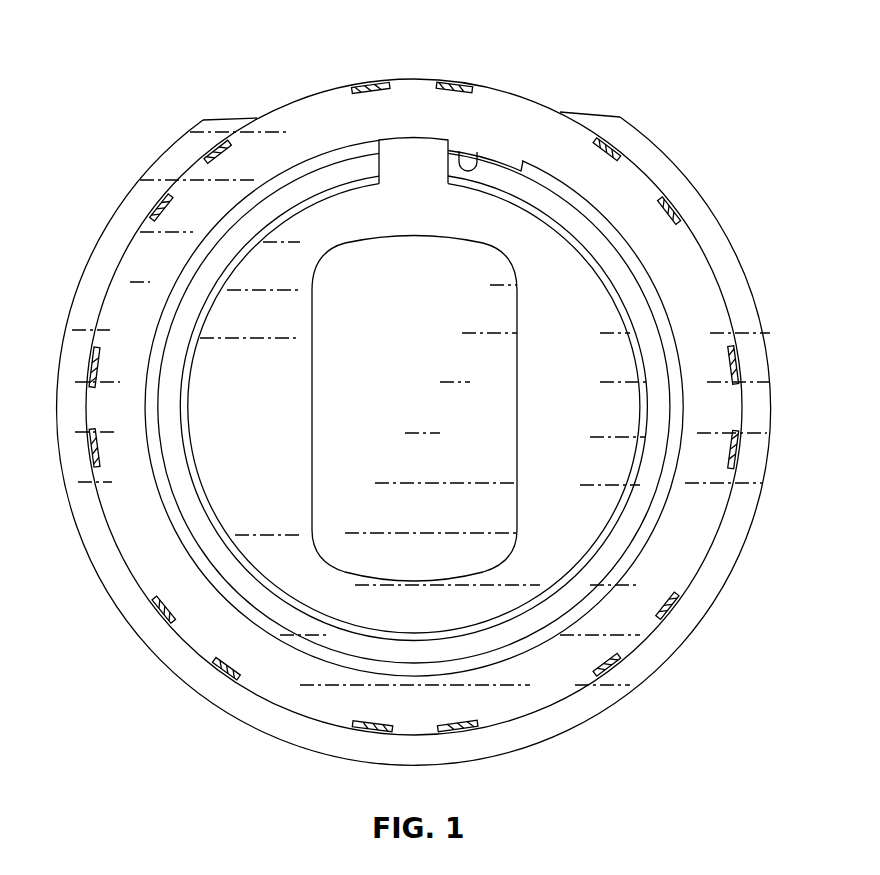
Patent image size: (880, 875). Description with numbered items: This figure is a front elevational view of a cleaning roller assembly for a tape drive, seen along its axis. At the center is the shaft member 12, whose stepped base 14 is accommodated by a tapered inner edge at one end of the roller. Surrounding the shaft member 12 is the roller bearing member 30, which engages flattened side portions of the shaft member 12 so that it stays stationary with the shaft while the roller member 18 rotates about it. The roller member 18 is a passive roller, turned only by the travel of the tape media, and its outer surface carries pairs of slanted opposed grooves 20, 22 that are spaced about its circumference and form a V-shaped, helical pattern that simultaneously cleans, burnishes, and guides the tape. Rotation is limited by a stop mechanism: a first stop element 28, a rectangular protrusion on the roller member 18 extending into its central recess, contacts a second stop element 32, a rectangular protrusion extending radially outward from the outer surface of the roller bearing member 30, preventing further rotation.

The shaft member 12 is at (330, 440).
The stepped base 14 is at (665, 165).
The roller member 18 is at (512, 112).
The slanted opposed groove 20 is at (452, 86).
The slanted opposed groove 22 is at (372, 86).
The first stop element 28 is at (470, 150).
The roller bearing member 30 is at (313, 566).
The second stop element 32 is at (404, 165).